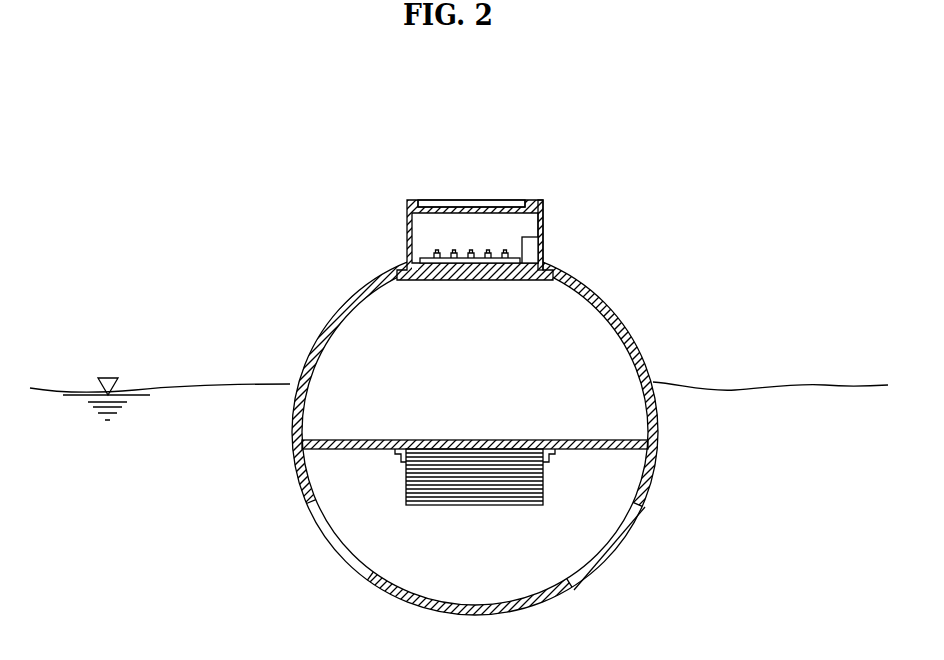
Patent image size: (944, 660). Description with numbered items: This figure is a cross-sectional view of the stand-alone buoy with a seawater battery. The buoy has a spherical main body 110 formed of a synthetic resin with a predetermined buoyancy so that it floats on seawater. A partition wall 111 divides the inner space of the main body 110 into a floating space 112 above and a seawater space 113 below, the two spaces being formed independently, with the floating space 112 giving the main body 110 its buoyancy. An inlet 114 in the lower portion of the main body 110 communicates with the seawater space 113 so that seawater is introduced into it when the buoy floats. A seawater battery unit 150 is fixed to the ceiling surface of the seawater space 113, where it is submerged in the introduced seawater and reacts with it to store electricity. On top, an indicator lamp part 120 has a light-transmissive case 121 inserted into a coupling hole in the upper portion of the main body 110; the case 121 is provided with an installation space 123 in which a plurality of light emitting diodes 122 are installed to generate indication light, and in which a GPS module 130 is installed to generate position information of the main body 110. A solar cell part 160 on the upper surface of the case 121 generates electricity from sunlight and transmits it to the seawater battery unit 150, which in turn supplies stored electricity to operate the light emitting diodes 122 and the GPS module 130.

The main body 110 is at (607, 304).
The partition wall 111 is at (587, 440).
The floating space 112 is at (369, 362).
The seawater space 113 is at (356, 484).
The inlet 114 is at (337, 555).
The indicator lamp part 120 is at (472, 348).
The case 121 is at (542, 202).
The light emitting diodes 122 is at (437, 252).
The installation space 123 is at (502, 233).
The GPS module 130 is at (528, 248).
The seawater battery unit 150 is at (543, 486).
The solar cell part 160 is at (450, 200).